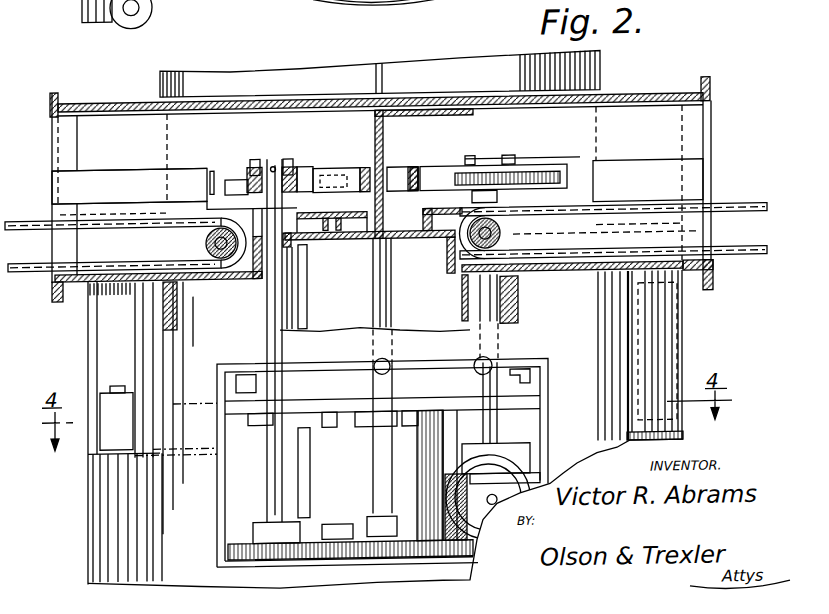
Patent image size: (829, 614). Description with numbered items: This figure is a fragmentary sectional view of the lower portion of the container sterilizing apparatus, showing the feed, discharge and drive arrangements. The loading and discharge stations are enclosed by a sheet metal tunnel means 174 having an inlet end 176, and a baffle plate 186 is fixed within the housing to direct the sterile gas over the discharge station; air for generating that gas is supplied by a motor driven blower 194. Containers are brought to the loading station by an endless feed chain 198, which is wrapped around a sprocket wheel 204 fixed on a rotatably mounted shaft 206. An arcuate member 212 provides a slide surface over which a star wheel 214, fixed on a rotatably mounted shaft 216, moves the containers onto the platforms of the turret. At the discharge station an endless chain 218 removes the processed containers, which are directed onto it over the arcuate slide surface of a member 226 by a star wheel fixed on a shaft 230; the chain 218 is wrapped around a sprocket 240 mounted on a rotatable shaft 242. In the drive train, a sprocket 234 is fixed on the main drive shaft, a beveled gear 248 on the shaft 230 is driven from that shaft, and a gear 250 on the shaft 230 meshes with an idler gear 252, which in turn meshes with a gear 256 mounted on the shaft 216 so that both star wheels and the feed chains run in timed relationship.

The sheet metal tunnel means 174 is at (658, 104).
The inlet end 176 is at (53, 129).
The motor driven blower 194 is at (140, 19).
The sprocket 234 is at (442, 10).
The baffle plate 186 is at (383, 153).
The star wheel 214 is at (302, 190).
The star wheel shaft 216 is at (271, 166).
The endless chain 218 is at (742, 216).
The sprocket 240 is at (503, 249).
The sprocket wheel 204 is at (203, 243).
The shaft 206 is at (218, 262).
The endless feed chain 198 is at (35, 271).
The arcuate member 212 is at (320, 224).
The member providing arcuate slide surface 226 is at (407, 246).
The rotatable shaft 242 is at (540, 310).
The star wheel shaft 230 is at (498, 384).
The beveled gear 248 is at (540, 476).
The gear 250 is at (479, 538).
The idler gear 252 is at (360, 526).
The gear 256 is at (228, 561).